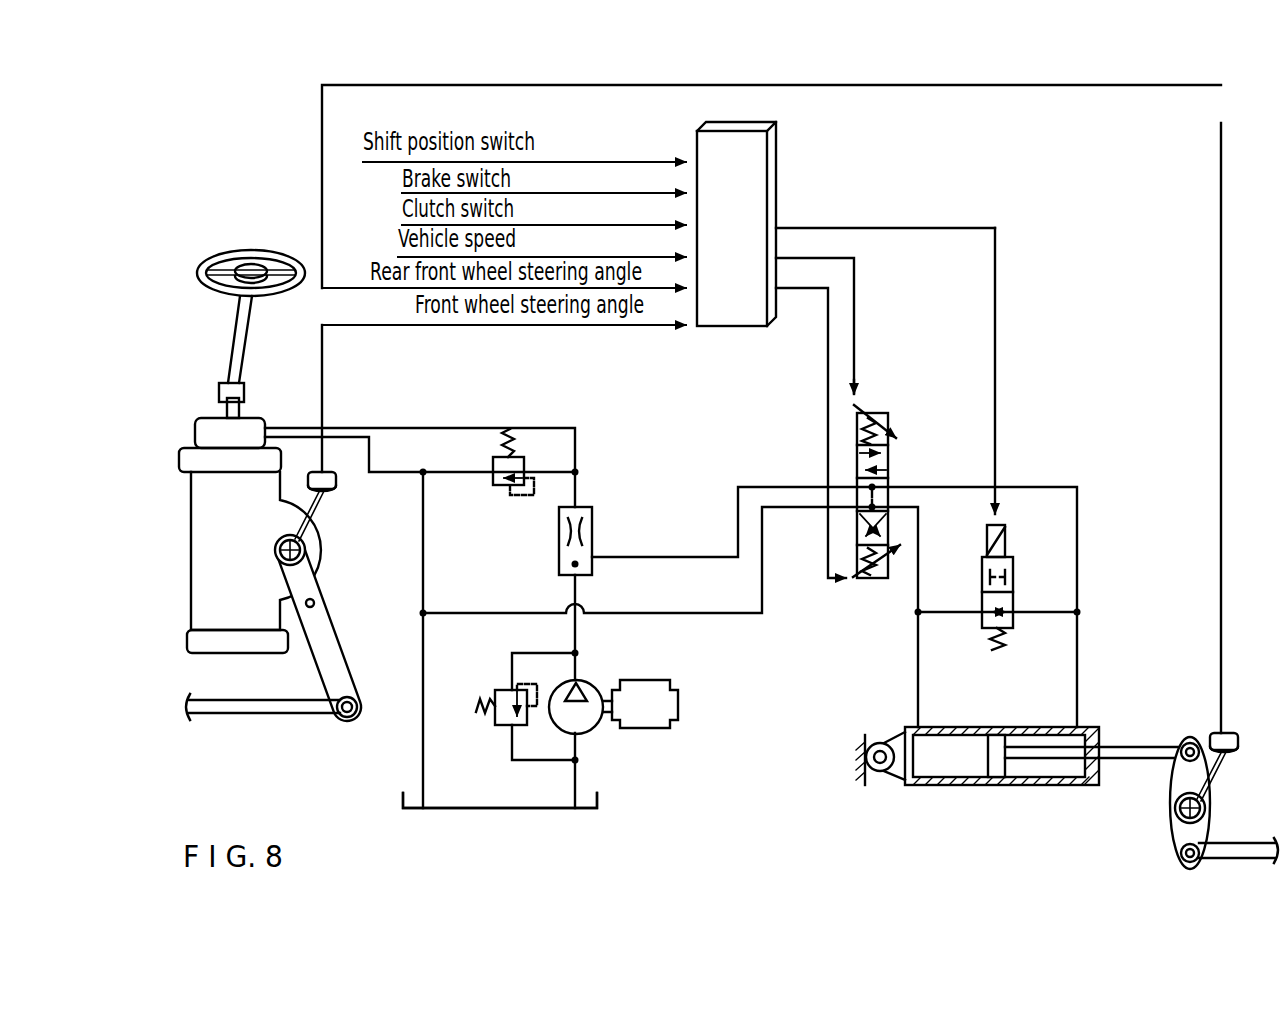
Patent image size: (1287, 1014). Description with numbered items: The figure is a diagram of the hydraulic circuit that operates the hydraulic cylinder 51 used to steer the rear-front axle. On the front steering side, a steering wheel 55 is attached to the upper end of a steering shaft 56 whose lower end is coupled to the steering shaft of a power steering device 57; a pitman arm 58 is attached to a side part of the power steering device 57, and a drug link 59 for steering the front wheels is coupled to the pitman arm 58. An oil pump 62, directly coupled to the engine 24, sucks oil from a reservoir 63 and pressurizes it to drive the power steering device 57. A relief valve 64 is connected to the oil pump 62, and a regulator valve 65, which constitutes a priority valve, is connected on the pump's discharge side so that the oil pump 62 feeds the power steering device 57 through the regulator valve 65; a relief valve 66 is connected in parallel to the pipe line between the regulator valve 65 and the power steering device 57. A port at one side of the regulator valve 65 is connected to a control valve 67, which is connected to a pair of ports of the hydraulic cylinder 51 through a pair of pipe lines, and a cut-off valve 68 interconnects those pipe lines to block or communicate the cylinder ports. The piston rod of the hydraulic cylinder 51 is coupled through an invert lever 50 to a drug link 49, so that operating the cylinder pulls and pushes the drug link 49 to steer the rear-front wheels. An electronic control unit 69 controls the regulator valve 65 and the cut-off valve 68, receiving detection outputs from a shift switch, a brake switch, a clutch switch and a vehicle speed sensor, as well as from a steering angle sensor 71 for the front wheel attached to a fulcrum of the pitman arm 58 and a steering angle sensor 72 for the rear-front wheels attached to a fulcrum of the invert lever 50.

The engine 24 is at (678, 705).
The drug link 49 is at (1237, 845).
The invert lever 50 is at (1173, 837).
The hydraulic cylinder 51 is at (950, 786).
The steering wheel 55 is at (250, 248).
The steering shaft 56 is at (250, 328).
The power steering device 57 is at (230, 627).
The pitman arm 58 is at (337, 653).
The drug link 59 is at (263, 712).
The oil pump 62 is at (593, 687).
The reservoir 63 is at (593, 805).
The relief valve 64 is at (497, 727).
The regulator valve 65 is at (592, 530).
The relief valve 66 is at (497, 487).
The control valve 67 is at (888, 463).
The cut-off valve 68 is at (1013, 586).
The electronic control unit 69 is at (776, 158).
The steering angle sensor 71 is at (330, 495).
The steering angle sensor 72 is at (1210, 731).